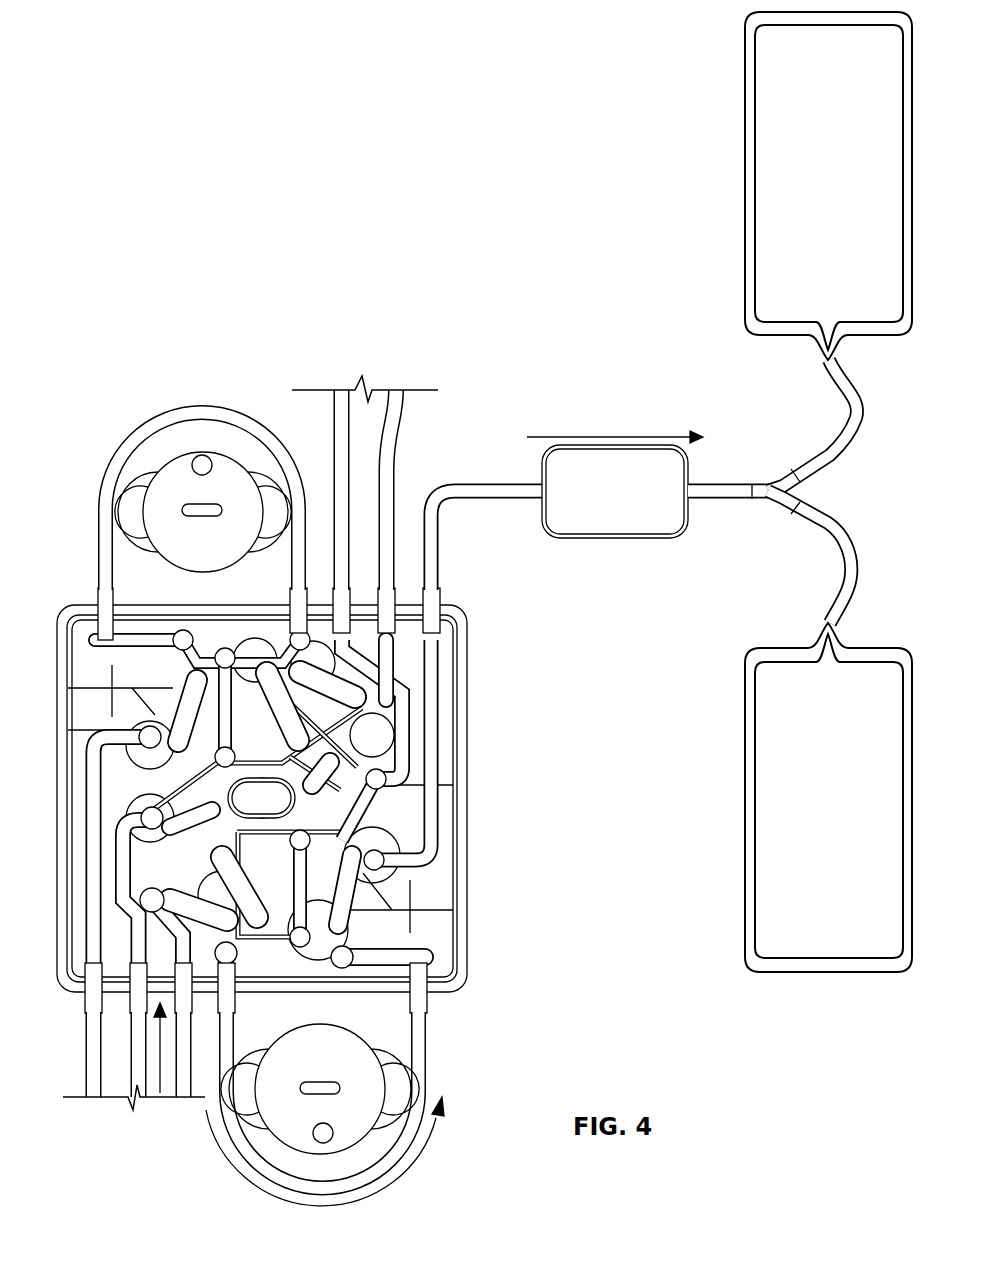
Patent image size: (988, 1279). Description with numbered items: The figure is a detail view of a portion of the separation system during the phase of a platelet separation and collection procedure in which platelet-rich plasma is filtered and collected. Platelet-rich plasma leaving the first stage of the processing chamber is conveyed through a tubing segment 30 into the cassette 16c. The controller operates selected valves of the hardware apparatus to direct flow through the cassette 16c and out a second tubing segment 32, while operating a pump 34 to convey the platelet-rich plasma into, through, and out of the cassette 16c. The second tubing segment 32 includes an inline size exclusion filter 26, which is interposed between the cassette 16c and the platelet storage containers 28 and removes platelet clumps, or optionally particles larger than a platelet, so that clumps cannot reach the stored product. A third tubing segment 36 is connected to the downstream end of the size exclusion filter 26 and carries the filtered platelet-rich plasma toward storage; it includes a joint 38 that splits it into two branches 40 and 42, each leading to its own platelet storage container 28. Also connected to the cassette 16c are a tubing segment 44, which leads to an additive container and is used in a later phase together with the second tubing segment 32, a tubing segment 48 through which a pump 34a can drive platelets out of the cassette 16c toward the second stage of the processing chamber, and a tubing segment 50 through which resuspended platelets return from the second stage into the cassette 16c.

The cassette 16c is at (58, 730).
The size exclusion filter 26 is at (612, 540).
The platelet storage container 28 is at (745, 238).
The tubing segment 30 is at (177, 1087).
The second tubing segment 32 is at (450, 487).
The pump 34 is at (365, 1032).
The pump 34a is at (180, 454).
The third tubing segment 36 is at (718, 500).
The joint 38 is at (770, 484).
The branch 40 is at (860, 408).
The branch 42 is at (858, 575).
The tubing segment 44 is at (400, 408).
The tubing segment 48 is at (85, 1047).
The tubing segment 50 is at (130, 1077).